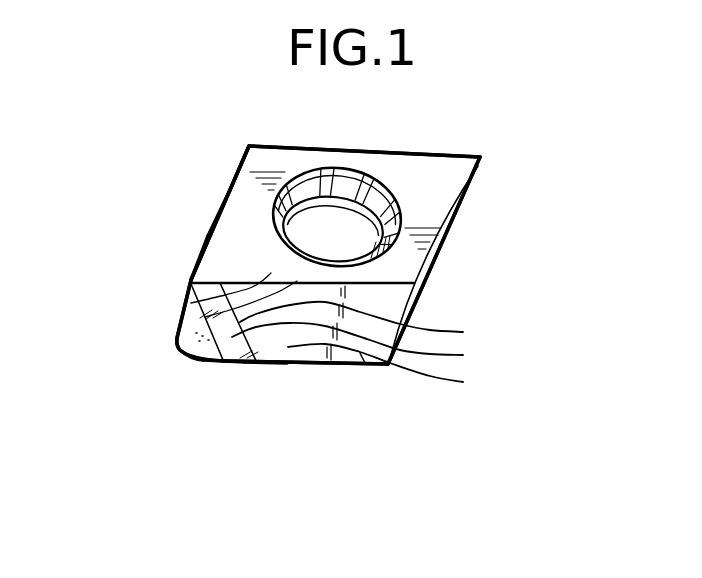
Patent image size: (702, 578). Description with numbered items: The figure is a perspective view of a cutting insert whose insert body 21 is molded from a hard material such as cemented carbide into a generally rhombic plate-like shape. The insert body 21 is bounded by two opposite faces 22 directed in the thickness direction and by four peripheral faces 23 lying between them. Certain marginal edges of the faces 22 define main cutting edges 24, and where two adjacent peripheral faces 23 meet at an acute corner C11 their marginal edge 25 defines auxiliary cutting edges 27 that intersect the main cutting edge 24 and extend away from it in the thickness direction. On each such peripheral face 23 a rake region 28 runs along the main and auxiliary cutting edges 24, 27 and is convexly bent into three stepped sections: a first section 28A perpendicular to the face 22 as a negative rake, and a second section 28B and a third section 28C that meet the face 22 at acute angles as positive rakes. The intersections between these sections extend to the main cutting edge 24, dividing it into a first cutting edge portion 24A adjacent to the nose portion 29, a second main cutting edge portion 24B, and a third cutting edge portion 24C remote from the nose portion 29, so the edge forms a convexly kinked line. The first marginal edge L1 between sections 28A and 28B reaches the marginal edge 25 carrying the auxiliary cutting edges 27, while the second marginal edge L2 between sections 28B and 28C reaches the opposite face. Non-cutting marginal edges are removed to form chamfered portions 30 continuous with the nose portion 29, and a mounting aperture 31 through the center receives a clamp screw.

The insert body 21 is at (549, 93).
The face 22 is at (410, 163).
The peripheral face 23 is at (436, 268).
The main cutting edge 24 is at (97, 142).
The first cutting edge portion 24A is at (196, 256).
The second main cutting edge portion 24B is at (208, 236).
The third cutting edge portion 24C is at (230, 190).
The marginal edge 25 is at (473, 178).
The auxiliary cutting edge 27 is at (192, 303).
The rake region 28 is at (540, 318).
The first section 28A is at (381, 325).
The second section 28B is at (377, 347).
The third section 28C is at (405, 371).
The nose portion 29 is at (188, 281).
The chamfered portion 30 is at (205, 278).
The mounting aperture 31 is at (341, 168).
The acute corner C11 is at (486, 156).
The first marginal edge L1 is at (243, 277).
The second marginal edge L2 is at (264, 288).